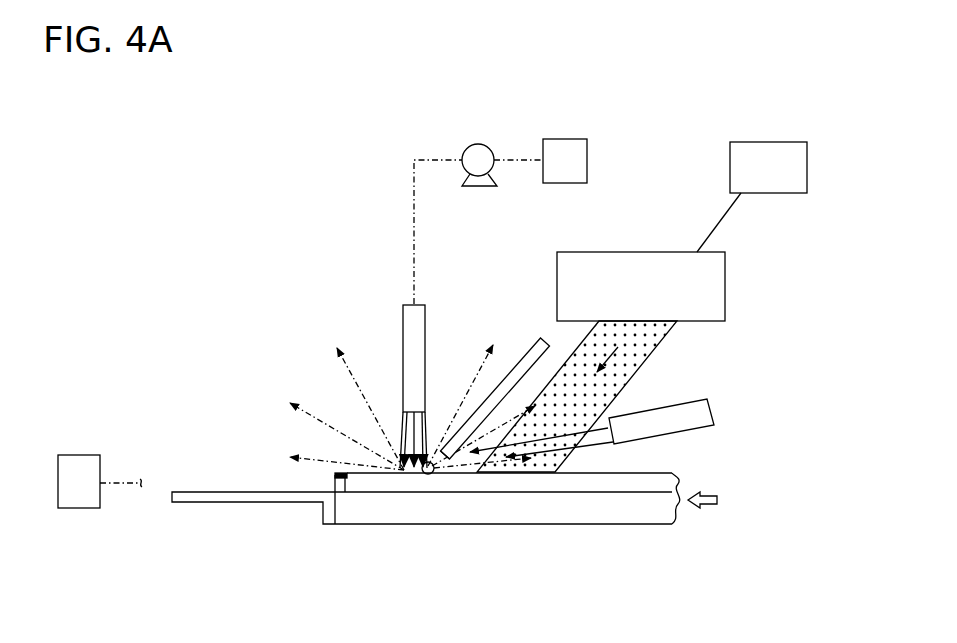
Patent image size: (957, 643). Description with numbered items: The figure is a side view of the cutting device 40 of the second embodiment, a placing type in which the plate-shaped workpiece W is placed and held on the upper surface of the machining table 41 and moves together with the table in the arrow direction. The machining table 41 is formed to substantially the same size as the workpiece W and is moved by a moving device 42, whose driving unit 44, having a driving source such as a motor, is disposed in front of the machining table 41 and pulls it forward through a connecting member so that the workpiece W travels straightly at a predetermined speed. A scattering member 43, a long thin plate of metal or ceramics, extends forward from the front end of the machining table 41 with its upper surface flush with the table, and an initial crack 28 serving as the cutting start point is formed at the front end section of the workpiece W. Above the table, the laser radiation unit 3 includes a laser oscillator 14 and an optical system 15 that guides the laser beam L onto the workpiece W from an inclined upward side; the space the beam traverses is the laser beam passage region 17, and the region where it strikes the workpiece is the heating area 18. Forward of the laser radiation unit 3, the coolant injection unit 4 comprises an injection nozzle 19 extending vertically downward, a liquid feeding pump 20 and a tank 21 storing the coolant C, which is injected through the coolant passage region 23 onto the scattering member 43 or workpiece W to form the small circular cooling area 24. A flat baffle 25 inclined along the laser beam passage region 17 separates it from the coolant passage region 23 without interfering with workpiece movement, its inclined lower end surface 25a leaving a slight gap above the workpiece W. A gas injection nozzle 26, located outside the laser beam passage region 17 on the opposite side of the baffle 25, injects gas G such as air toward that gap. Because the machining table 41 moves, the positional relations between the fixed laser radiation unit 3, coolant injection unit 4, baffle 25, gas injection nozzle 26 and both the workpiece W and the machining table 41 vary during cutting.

The laser radiation unit 3 is at (635, 79).
The coolant injection unit 4 is at (386, 181).
The laser oscillator 14 is at (748, 150).
The optical system 15 is at (660, 260).
The laser beam passage region 17 is at (633, 360).
The heating area 18 is at (515, 462).
The injection nozzle 19 is at (402, 322).
The liquid feeding pump 20 is at (478, 150).
The tank 21 is at (567, 140).
The coolant passage region 23 is at (408, 438).
The cooling area 24 is at (433, 472).
The baffle 25 is at (515, 370).
The lower end surface 25a is at (450, 470).
The gas injection nozzle 26 is at (700, 412).
The initial crack 28 is at (342, 478).
The cutting device 40 is at (255, 279).
The machining table 41 is at (622, 512).
The moving device 42 is at (75, 433).
The scattering member 43 is at (243, 500).
The driving unit 44 is at (77, 493).
The workpiece W is at (640, 480).
The laser beam L is at (658, 347).
The coolant C is at (432, 445).
The gas G is at (600, 425).